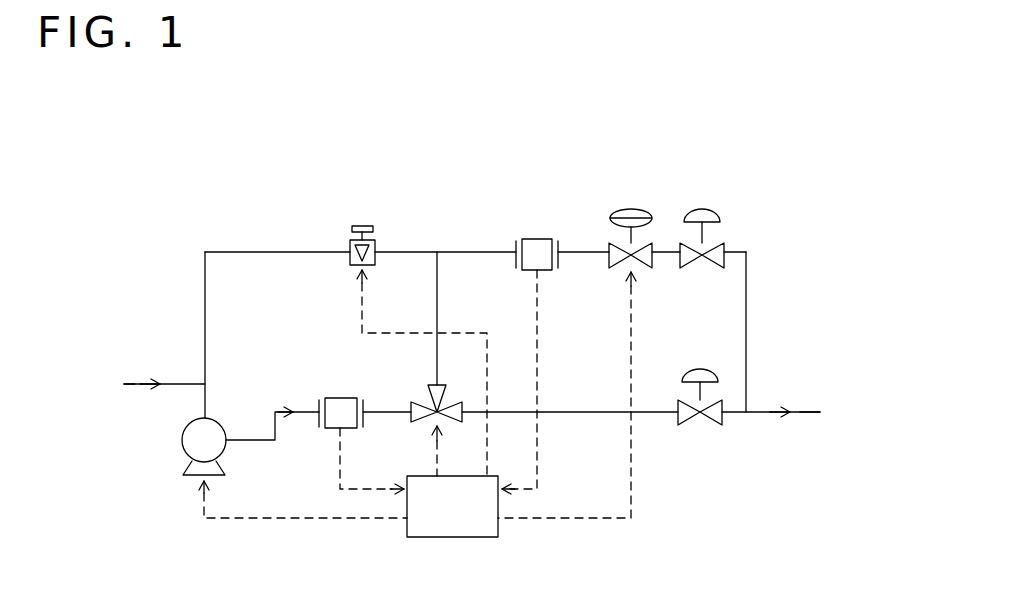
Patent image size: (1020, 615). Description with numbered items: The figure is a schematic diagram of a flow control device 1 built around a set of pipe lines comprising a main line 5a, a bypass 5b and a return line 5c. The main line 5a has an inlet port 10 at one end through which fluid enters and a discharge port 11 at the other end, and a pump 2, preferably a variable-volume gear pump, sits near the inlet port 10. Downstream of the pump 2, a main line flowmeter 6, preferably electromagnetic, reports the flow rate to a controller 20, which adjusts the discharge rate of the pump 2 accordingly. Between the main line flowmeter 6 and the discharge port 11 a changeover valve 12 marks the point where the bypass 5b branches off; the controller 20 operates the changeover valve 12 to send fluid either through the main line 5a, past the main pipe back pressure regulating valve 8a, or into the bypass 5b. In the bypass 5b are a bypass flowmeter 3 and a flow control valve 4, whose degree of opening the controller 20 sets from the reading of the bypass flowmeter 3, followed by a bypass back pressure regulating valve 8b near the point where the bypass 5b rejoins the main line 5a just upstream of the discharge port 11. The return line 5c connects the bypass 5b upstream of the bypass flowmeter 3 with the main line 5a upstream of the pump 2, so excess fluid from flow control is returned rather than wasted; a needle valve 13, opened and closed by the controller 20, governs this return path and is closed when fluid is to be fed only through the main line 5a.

The device 1 is at (736, 203).
The pump 2 is at (180, 452).
The bypass flowmeter 3 is at (538, 239).
The flow control valve 4 is at (650, 250).
The main line 5a is at (178, 383).
The bypass 5b is at (440, 292).
The return line 5c is at (268, 250).
The main line flowmeter 6 is at (336, 428).
The main pipe back pressure regulating valve 8a is at (710, 428).
The bypass back pressure regulating valve 8b is at (728, 249).
The inlet port 10 is at (117, 385).
The discharge port 11 is at (820, 419).
The changeover valve 12 is at (431, 418).
The needle valve 13 is at (378, 250).
The controller 20 is at (478, 537).